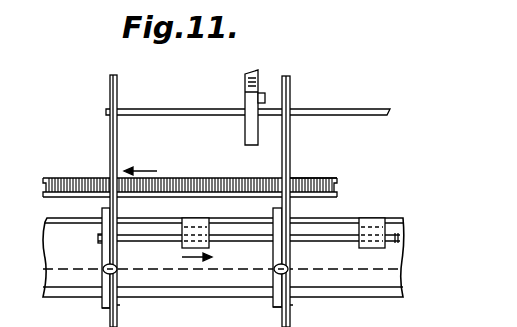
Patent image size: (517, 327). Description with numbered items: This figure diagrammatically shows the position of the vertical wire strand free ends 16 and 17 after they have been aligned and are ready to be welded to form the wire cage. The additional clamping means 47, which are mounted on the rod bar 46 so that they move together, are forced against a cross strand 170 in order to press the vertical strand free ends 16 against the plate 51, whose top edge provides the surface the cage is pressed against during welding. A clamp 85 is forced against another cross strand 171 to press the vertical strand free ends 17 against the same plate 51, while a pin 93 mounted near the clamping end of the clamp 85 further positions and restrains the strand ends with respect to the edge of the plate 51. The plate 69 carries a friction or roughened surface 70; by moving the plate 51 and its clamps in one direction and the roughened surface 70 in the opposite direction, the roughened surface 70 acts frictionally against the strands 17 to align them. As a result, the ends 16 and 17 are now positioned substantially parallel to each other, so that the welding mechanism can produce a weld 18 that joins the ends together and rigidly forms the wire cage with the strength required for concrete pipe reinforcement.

The vertical wire strand free end 16 is at (105, 310).
The vertical wire strand free end 17 is at (120, 305).
The weld 18 is at (107, 268).
The rod bar 46 is at (342, 218).
The additional clamping means 47 is at (192, 220).
The plate 51 is at (216, 288).
The plate 69 is at (52, 180).
The roughened surface 70 is at (316, 180).
The clamp 85 is at (246, 130).
The pin 93 is at (263, 94).
The cross strand 170 is at (170, 238).
The cross strand 171 is at (346, 109).